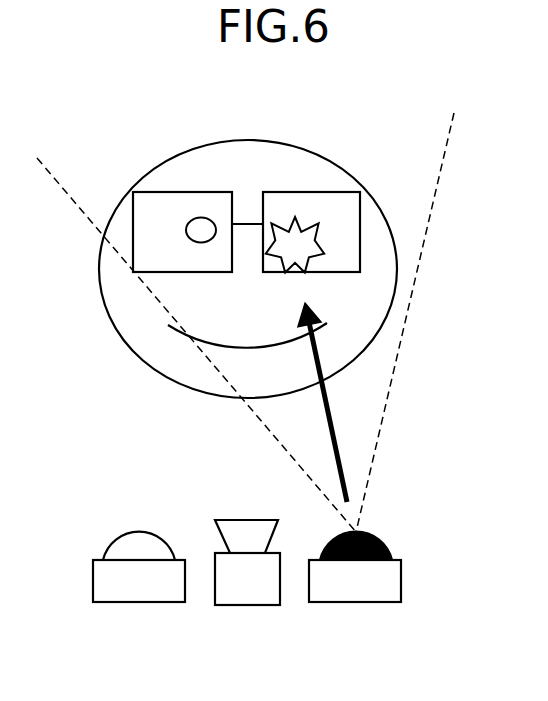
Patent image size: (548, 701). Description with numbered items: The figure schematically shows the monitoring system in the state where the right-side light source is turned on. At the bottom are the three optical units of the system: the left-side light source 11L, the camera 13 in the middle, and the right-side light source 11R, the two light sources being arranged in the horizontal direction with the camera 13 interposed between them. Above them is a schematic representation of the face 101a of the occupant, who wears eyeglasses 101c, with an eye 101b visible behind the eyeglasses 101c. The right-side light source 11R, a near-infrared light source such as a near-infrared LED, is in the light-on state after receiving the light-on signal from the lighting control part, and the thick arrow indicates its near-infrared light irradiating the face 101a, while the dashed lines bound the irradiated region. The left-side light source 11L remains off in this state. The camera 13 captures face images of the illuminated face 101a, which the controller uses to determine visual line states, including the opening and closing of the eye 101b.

The face 101a is at (248, 153).
The eye 101b is at (287, 220).
The eyeglasses 101c is at (315, 190).
The left-side light source 11L is at (142, 602).
The camera 13 is at (247, 605).
The right-side light source 11R is at (357, 602).